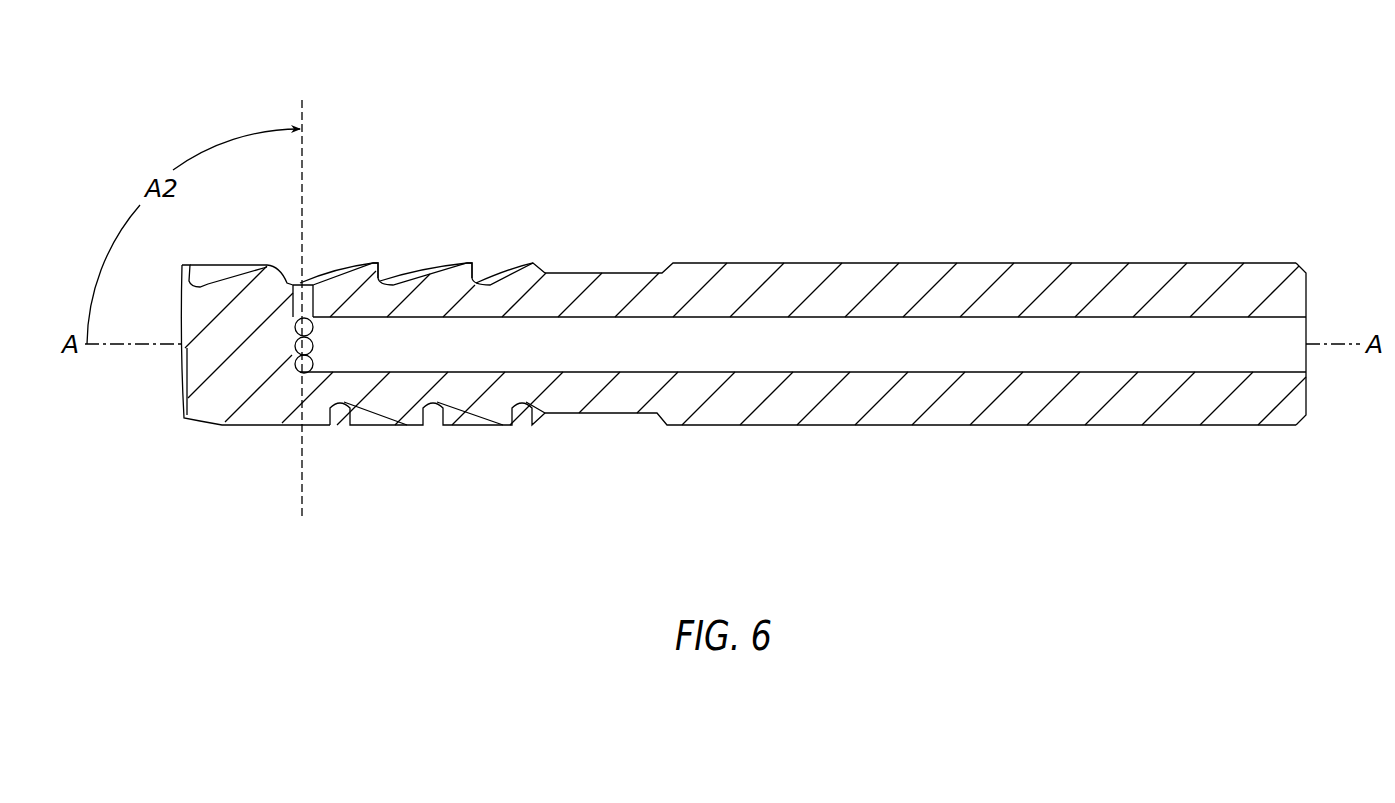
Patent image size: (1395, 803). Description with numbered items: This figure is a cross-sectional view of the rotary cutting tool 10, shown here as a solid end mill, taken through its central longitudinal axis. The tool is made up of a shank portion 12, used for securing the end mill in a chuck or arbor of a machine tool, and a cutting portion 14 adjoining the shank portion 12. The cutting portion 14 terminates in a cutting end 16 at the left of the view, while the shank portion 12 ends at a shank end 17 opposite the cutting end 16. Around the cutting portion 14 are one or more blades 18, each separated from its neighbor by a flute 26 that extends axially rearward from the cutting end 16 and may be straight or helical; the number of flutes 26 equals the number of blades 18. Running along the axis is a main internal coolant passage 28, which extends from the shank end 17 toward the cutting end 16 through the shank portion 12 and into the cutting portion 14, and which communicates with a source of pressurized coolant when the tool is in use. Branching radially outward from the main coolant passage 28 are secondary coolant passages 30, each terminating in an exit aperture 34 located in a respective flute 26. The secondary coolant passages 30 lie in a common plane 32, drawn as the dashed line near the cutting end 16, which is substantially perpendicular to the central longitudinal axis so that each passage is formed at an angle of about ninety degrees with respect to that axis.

The rotary cutting tool 10 is at (930, 128).
The shank portion 12 is at (1026, 250).
The cutting portion 14 is at (452, 216).
The cutting end 16 is at (158, 305).
The shank end 17 is at (1318, 301).
The blade 18 is at (278, 260).
The flute 26 is at (305, 265).
The main coolant passage 28 is at (1280, 358).
The secondary coolant passage 30 is at (296, 327).
The common plane 32 is at (306, 150).
The exit aperture 34 is at (312, 283).